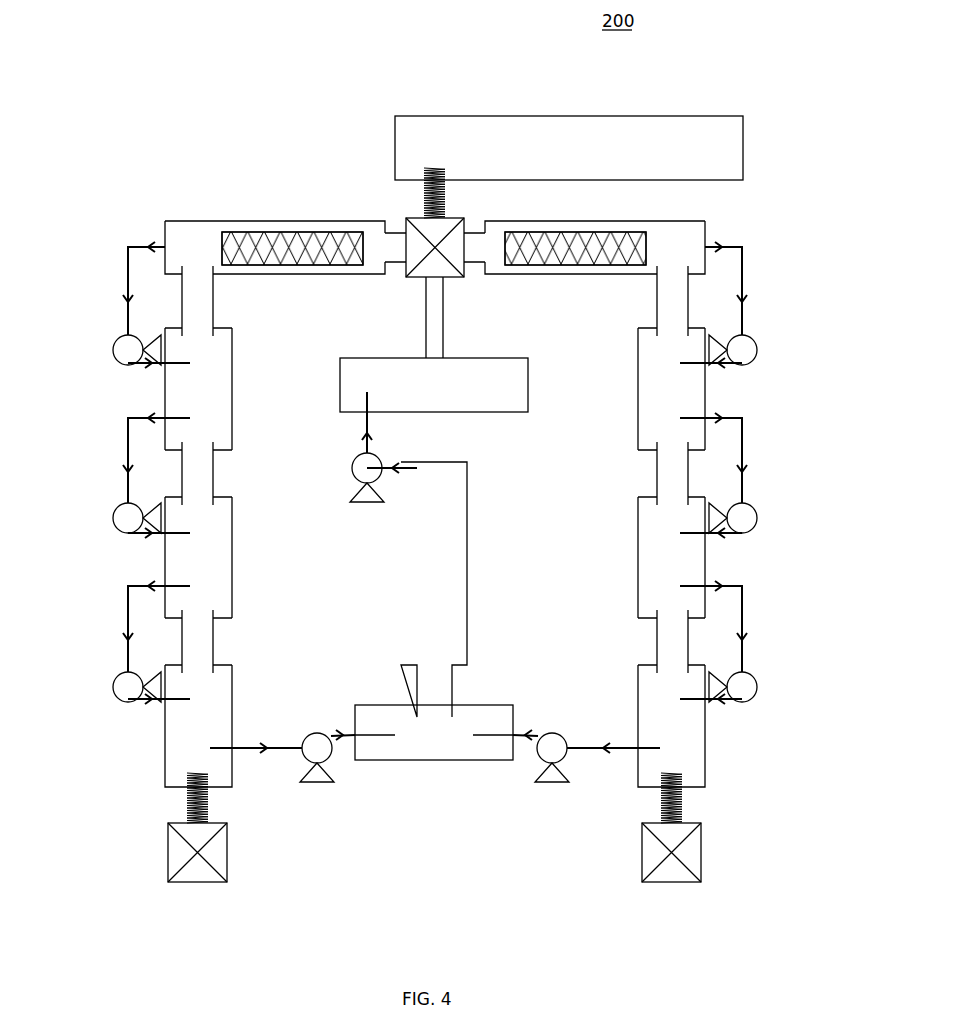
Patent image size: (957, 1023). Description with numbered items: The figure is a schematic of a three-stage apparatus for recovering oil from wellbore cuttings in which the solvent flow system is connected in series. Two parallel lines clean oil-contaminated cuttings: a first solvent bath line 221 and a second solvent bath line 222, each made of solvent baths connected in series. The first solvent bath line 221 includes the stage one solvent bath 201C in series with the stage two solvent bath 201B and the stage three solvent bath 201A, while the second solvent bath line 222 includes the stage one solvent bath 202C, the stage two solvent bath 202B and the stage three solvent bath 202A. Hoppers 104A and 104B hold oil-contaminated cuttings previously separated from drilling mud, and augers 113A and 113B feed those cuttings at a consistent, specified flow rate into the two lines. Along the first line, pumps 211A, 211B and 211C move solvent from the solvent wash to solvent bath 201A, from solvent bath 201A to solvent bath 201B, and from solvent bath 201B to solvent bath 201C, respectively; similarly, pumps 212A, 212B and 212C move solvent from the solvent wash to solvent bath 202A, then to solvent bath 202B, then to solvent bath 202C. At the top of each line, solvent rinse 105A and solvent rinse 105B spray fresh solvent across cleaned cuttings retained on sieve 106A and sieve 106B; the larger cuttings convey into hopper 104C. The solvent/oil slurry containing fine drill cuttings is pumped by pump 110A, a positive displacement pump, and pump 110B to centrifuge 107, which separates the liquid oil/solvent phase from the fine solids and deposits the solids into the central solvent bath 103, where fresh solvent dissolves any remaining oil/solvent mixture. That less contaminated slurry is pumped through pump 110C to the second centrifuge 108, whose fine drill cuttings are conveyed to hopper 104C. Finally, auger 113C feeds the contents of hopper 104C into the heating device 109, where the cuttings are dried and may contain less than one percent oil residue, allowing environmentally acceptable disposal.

The central solvent bath 103 is at (457, 508).
The hopper 104A is at (202, 872).
The hopper 104B is at (675, 872).
The hopper 104C is at (445, 268).
The solvent rinse 105A is at (273, 225).
The solvent rinse 105B is at (600, 225).
The sieve 106A is at (243, 237).
The sieve 106B is at (513, 237).
The centrifuge 107 is at (402, 750).
The second centrifuge 108 is at (478, 367).
The heating device 109 is at (632, 126).
The pump 110A is at (312, 772).
The pump 110B is at (552, 772).
The pump 110C is at (368, 490).
The auger 113A is at (187, 802).
The auger 113B is at (684, 802).
The auger 113C is at (422, 205).
The solvent bath 201A is at (175, 390).
The solvent bath 201B is at (175, 558).
The solvent bath 201C is at (177, 738).
The solvent bath 202A is at (692, 392).
The solvent bath 202B is at (692, 561).
The solvent bath 202C is at (693, 730).
The pump 211A is at (100, 348).
The pump 211B is at (100, 516).
The pump 211C is at (100, 685).
The pump 212A is at (770, 348).
The pump 212B is at (770, 516).
The pump 212C is at (770, 685).
The first solvent bath line 221 is at (122, 580).
The second solvent bath line 222 is at (743, 577).